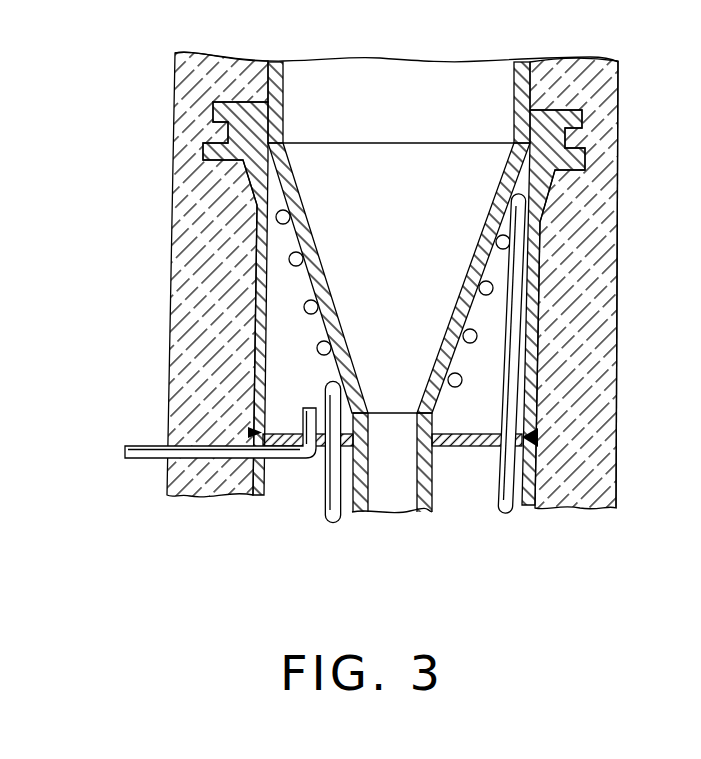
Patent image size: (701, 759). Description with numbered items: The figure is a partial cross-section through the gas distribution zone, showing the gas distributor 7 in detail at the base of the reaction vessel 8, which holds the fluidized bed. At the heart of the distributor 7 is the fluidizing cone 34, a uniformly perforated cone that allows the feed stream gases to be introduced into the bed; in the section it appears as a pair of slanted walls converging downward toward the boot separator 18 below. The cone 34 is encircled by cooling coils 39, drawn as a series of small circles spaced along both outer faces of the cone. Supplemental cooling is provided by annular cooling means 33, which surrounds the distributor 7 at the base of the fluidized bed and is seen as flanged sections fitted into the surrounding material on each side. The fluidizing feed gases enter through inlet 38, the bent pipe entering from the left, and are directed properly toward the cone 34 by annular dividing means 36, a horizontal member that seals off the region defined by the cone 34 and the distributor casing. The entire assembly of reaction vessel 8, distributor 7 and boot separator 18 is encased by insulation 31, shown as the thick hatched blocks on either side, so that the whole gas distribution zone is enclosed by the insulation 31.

The gas distributor 7 is at (630, 457).
The reaction vessel 8 is at (488, 90).
The boot separator 18 is at (385, 493).
The insulation 31 is at (175, 340).
The annular cooling means 33 is at (232, 130).
The fluidizing cone 34 is at (300, 243).
The annular dividing means 36 is at (463, 450).
The inlet 38 is at (160, 446).
The cooling coils 39 is at (284, 261).